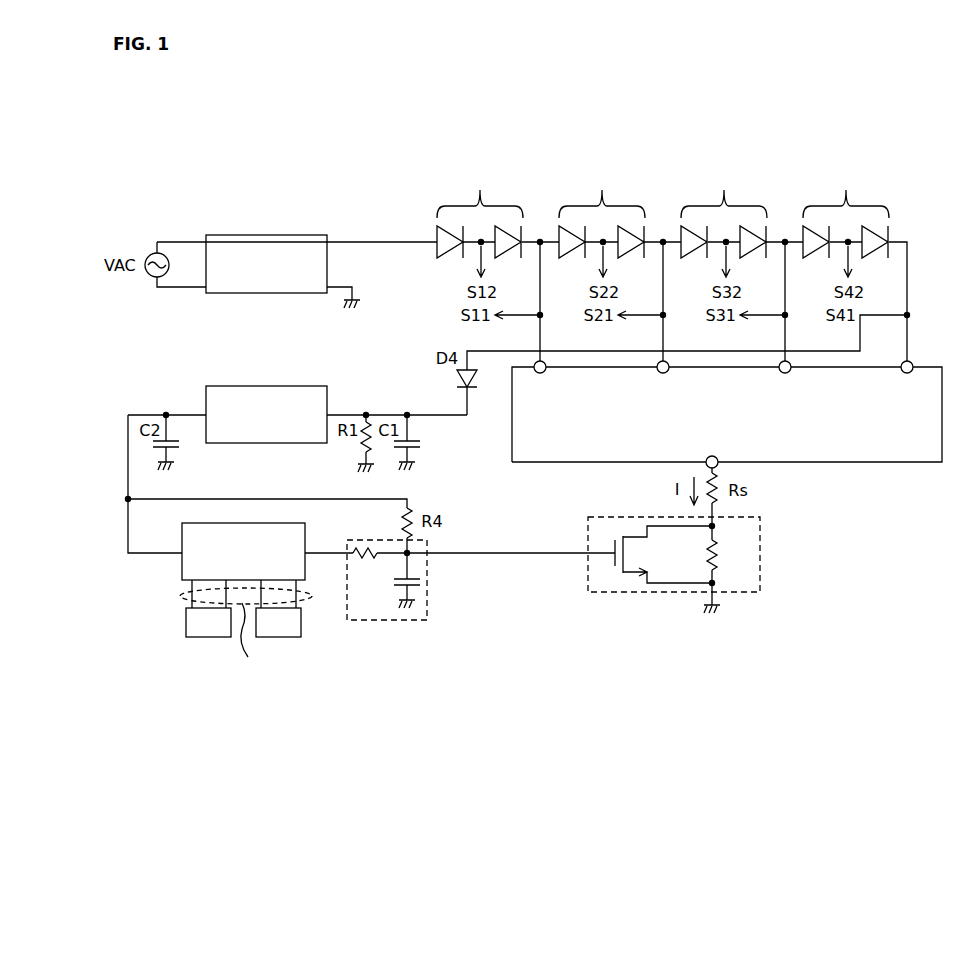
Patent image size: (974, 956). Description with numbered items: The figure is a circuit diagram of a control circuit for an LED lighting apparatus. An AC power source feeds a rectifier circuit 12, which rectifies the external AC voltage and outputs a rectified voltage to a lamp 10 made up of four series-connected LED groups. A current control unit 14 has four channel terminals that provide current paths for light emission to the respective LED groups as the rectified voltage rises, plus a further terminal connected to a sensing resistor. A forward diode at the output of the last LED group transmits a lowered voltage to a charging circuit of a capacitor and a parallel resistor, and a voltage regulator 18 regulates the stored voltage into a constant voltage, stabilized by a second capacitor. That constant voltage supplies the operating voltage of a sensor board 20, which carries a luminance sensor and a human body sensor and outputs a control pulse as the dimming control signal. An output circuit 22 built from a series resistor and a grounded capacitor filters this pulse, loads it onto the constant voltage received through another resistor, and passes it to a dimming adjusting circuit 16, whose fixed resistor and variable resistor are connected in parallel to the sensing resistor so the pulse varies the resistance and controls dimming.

The lamp 10 is at (467, 165).
The rectifier circuit 12 is at (259, 235).
The current control unit 14 is at (882, 462).
The dimming adjusting circuit 16 is at (760, 540).
The voltage regulator 18 is at (262, 386).
The sensor board 20 is at (182, 566).
The output circuit 22 is at (428, 588).